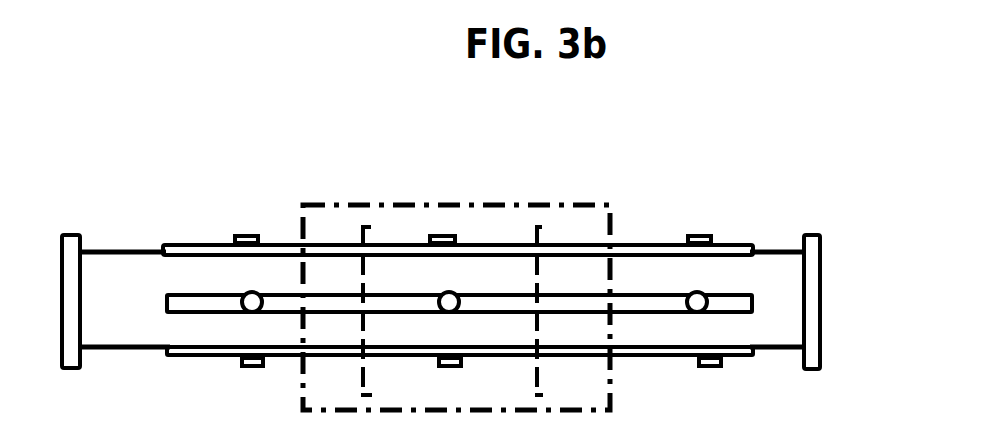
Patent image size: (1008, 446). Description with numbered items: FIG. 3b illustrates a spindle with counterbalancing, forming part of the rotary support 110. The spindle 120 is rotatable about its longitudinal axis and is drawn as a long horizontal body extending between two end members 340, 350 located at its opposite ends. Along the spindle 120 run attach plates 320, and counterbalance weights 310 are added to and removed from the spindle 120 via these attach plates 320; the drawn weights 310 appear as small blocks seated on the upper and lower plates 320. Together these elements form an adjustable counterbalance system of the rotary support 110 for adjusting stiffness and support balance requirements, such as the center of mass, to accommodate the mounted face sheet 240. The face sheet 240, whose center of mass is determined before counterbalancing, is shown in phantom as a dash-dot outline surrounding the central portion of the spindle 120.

The rotary support 110 is at (272, 152).
The spindle 120 is at (113, 352).
The face sheet 240 is at (472, 205).
The counterbalance weights 310 is at (712, 371).
The attach plates 320 is at (633, 358).
The left end stop 340 is at (75, 233).
The right end stop 350 is at (813, 233).